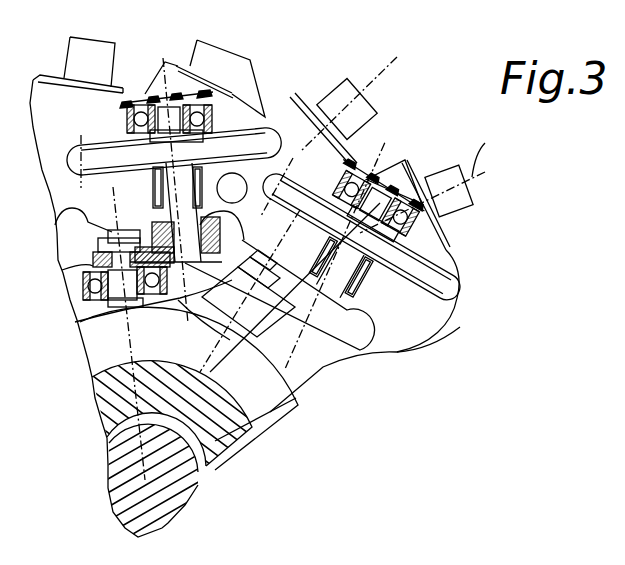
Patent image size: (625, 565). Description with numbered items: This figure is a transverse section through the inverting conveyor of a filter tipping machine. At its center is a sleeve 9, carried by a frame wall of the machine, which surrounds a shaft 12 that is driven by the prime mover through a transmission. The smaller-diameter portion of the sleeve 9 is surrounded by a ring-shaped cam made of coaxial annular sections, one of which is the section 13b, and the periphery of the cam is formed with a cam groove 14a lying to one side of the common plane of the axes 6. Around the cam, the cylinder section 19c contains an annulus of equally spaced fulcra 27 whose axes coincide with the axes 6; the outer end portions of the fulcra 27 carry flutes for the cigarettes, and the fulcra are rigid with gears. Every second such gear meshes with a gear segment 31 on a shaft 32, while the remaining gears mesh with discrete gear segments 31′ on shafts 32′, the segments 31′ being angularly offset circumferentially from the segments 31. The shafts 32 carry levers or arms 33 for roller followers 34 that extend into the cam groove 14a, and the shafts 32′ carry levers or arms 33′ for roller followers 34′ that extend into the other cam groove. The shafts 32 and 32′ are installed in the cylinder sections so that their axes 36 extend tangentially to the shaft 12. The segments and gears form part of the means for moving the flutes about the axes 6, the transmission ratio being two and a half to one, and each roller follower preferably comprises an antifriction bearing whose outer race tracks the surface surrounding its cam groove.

The axis 6 is at (383, 78).
The sleeve 9 is at (225, 455).
The shaft 12 is at (173, 508).
The annular cam section 13b is at (265, 403).
The cam groove 14a is at (312, 370).
The cylinder section 19c is at (412, 330).
The fulcrum 27 is at (105, 55).
The gear segment 31 is at (450, 284).
The gear segment 31′ is at (96, 118).
The shaft 32 is at (425, 306).
The shaft 32′ is at (158, 190).
The lever or arm 33 is at (380, 367).
The lever or arm 33′ is at (98, 252).
The roller follower 34 is at (313, 372).
The roller follower 34′ is at (85, 292).
The axis 36 is at (192, 298).